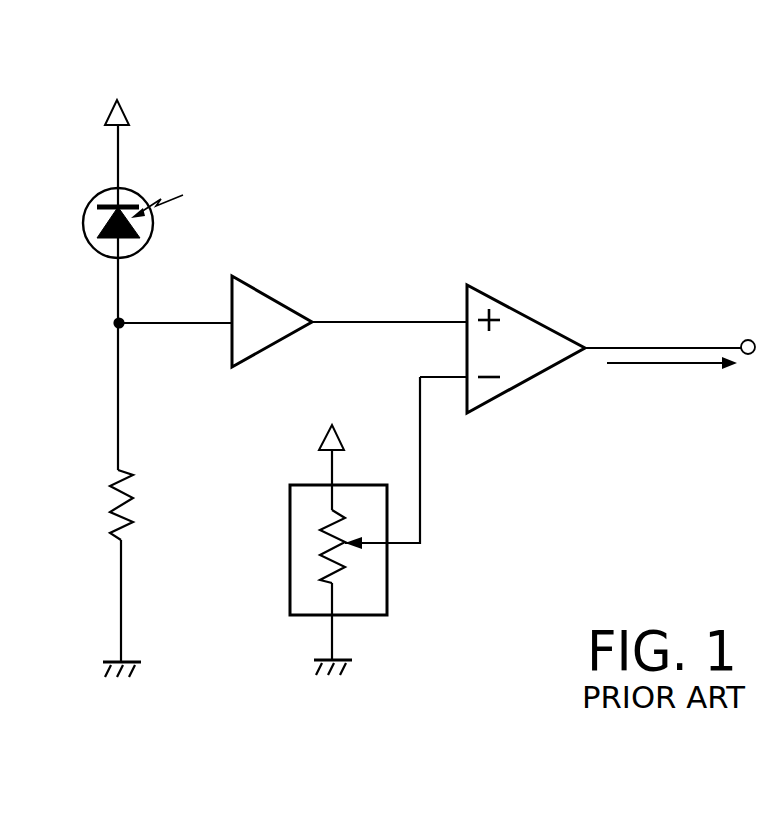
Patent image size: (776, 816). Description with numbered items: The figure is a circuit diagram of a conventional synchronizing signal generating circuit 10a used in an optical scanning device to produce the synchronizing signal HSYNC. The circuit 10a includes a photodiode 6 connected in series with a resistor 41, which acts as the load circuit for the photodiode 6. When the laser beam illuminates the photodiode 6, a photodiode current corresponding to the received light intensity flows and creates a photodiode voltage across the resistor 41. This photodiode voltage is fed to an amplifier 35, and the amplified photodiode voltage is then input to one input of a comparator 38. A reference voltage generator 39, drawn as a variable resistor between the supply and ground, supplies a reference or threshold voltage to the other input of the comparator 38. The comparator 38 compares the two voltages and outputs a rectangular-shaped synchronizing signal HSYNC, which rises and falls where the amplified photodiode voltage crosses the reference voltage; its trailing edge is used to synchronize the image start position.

The synchronizing signal generating circuit 10a is at (383, 88).
The photodiode 6 is at (83, 223).
The amplifier 35 is at (270, 293).
The comparator 38 is at (533, 315).
The reference voltage generator 39 is at (290, 537).
The resistor 41 is at (110, 507).